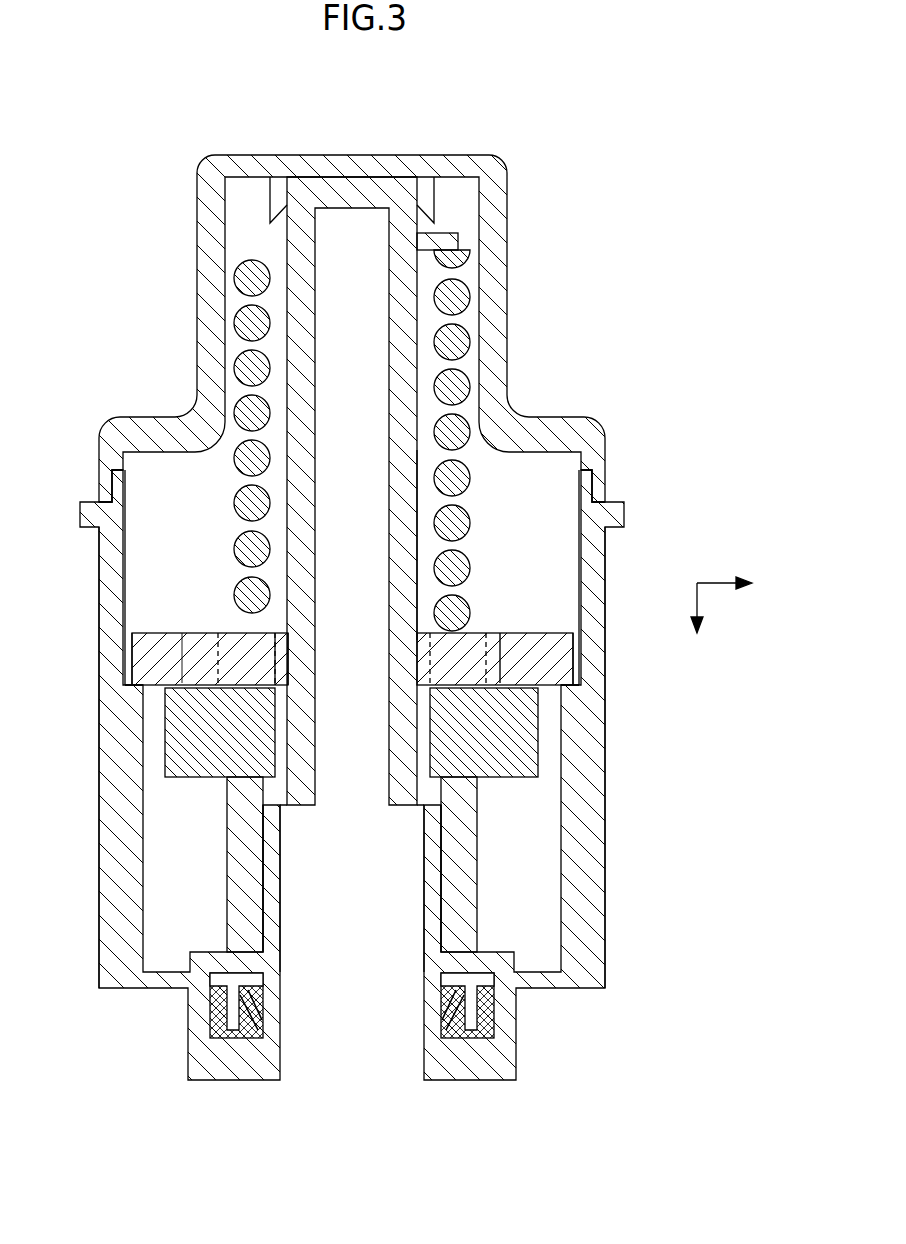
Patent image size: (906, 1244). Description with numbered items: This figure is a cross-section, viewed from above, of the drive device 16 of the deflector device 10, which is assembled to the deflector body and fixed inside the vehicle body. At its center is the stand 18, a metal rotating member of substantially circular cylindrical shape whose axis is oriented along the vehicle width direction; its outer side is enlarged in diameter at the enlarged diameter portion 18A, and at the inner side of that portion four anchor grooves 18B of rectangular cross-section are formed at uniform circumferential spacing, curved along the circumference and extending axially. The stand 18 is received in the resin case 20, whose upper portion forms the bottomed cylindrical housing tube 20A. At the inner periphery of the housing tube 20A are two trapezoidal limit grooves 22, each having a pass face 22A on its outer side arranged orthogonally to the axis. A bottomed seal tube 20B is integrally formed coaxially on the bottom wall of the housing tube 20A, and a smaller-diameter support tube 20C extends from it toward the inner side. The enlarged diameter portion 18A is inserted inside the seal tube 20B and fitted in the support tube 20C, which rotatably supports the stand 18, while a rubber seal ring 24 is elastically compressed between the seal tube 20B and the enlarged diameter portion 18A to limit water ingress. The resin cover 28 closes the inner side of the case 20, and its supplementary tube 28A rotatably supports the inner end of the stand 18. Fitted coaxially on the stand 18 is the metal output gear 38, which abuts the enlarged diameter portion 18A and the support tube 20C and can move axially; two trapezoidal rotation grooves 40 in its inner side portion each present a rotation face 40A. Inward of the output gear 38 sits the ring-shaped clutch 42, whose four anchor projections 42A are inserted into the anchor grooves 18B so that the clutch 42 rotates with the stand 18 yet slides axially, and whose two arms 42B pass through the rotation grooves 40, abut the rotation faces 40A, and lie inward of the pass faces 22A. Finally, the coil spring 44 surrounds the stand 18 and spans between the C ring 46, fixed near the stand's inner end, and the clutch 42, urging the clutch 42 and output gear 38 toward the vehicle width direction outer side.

The fuel tank system 10 is at (409, 563).
The drive device 16 is at (104, 108).
The stand 18 is at (304, 564).
The enlarged diameter portion 18A is at (262, 895).
The anchor grooves 18B is at (418, 542).
The case 20 is at (359, 775).
The housing tube 20A is at (605, 828).
The seal tube 20B is at (335, 1008).
The support tube 20C is at (477, 876).
The limit grooves 22 is at (125, 606).
The pass face 22A is at (128, 675).
The seal ring 24 is at (494, 1020).
The cover 28 is at (352, 328).
The supplementary tube 28A is at (436, 203).
The output gear 38 is at (165, 748).
The rotation grooves 40 is at (182, 633).
The rotation face 40A is at (500, 633).
The clutch 42 is at (352, 616).
The anchor projections 42A is at (290, 650).
The arms 42B is at (150, 633).
The coil spring 44 is at (471, 479).
The C ring 46 is at (459, 242).